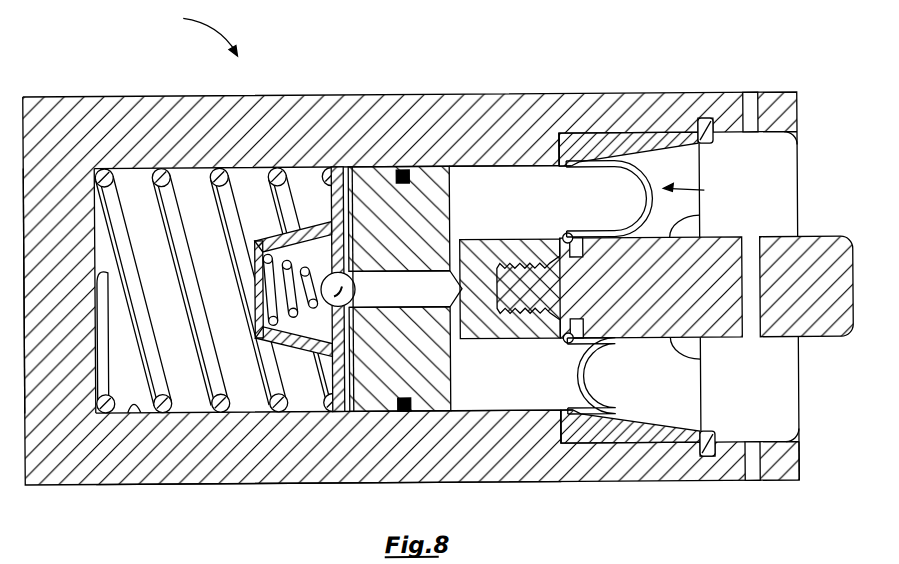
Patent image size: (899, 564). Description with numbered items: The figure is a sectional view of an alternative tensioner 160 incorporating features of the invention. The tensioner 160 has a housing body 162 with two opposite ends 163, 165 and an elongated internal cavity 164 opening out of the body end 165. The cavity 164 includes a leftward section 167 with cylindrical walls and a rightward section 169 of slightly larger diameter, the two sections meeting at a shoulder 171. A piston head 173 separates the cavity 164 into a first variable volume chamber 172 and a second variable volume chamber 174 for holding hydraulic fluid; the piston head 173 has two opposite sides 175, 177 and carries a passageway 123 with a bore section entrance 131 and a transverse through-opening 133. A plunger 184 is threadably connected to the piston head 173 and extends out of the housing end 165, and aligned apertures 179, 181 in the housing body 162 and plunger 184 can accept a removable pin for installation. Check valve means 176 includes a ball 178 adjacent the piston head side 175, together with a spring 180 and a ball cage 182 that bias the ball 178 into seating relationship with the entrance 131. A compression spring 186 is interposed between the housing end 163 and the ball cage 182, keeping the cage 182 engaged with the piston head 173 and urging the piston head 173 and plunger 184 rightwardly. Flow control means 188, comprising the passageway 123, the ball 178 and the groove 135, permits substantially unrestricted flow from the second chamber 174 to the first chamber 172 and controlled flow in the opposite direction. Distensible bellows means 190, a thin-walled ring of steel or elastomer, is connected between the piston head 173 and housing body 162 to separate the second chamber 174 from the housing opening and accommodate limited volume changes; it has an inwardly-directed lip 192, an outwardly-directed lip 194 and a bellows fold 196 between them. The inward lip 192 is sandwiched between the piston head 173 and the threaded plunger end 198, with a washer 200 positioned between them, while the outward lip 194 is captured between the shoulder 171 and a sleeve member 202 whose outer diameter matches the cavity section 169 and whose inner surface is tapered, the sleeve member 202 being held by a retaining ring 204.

The tensioner 160 is at (188, 32).
The housing body 162 is at (258, 484).
The housing end 163 is at (63, 485).
The internal cavity 164 is at (320, 168).
The housing end 165 is at (800, 472).
The leftward cavity section 167 is at (133, 406).
The rightward cavity section 169 is at (803, 145).
The shoulder 171 is at (562, 166).
The first variable volume chamber 172 is at (200, 170).
The piston head 173 is at (425, 166).
The second variable volume chamber 174 is at (482, 166).
The piston head side 175 is at (286, 392).
The check valve means 176 is at (290, 321).
The piston head side 177 is at (452, 393).
The ball 178 is at (337, 302).
The aperture 179 is at (756, 94).
The spring 180 is at (284, 242).
The aperture 181 is at (753, 326).
The ball cage 182 is at (254, 298).
The plunger 184 is at (818, 239).
The compression spring 186 is at (163, 171).
The flow control means 188 is at (356, 115).
The bellows means 190 is at (703, 192).
The inwardly-directed lip 192 is at (564, 234).
The outwardly-directed lip 194 is at (560, 172).
The bellows fold 196 is at (640, 195).
The threaded plunger end 198 is at (677, 231).
The washer 200 is at (584, 338).
The sleeve member 202 is at (626, 131).
The retaining ring 204 is at (714, 139).
The passageway 123 is at (415, 306).
The bore section entrance 131 is at (373, 306).
The transverse through-opening 133 is at (453, 242).
The groove 135 is at (350, 238).